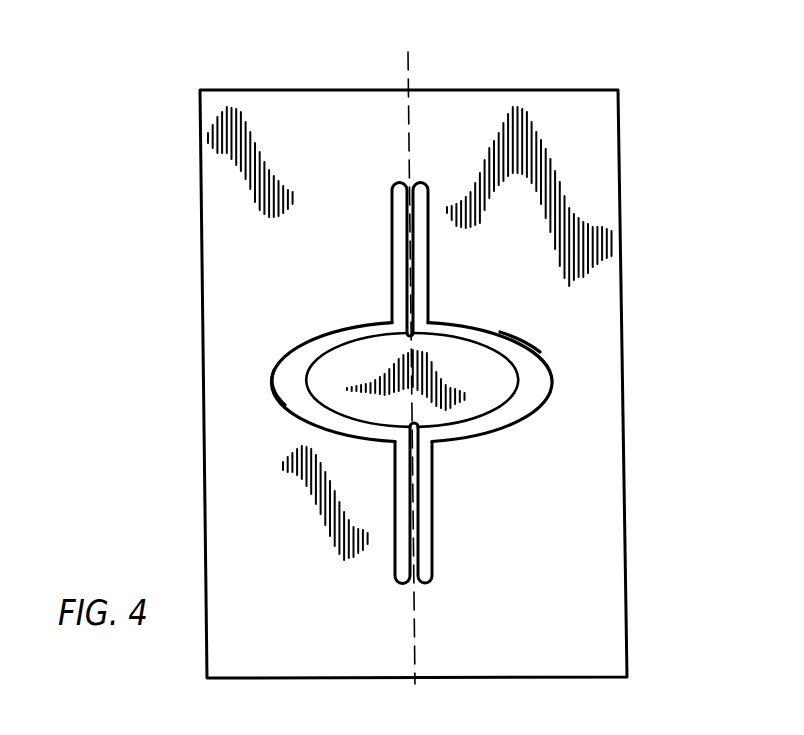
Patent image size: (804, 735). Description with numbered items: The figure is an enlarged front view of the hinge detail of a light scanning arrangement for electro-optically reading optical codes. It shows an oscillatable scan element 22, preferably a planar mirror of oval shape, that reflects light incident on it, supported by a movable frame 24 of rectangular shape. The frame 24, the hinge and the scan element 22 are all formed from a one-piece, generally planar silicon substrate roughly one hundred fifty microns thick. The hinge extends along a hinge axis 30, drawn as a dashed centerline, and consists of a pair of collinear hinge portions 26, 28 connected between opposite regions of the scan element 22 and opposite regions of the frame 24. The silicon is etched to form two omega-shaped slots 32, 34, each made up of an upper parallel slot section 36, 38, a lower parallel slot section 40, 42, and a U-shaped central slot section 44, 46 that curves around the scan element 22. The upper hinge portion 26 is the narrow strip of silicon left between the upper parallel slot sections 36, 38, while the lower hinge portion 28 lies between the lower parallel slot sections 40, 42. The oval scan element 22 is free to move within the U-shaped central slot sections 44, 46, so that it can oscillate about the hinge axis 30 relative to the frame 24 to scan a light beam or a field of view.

The scan element 22 is at (487, 398).
The frame 24 is at (588, 571).
The hinge portion 26 is at (408, 247).
The hinge portion 28 is at (400, 518).
The hinge axis 30 is at (409, 57).
The omega-shaped slot 32 is at (302, 414).
The omega-shaped slot 34 is at (556, 378).
The upper parallel slot section 36 is at (388, 229).
The upper parallel slot section 38 is at (432, 284).
The lower parallel slot section 40 is at (398, 490).
The lower parallel slot section 42 is at (432, 488).
The U-shaped central slot section 44 is at (288, 400).
The U-shaped central slot section 46 is at (518, 348).